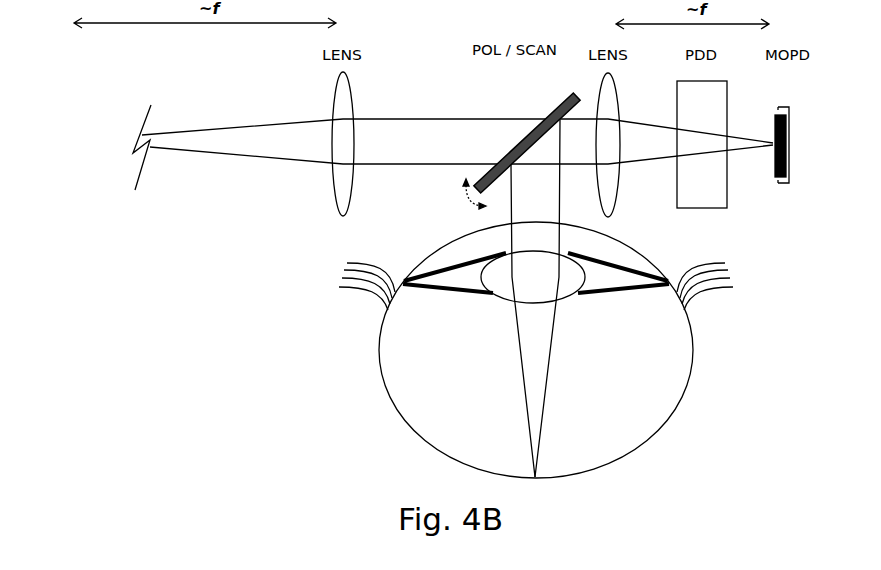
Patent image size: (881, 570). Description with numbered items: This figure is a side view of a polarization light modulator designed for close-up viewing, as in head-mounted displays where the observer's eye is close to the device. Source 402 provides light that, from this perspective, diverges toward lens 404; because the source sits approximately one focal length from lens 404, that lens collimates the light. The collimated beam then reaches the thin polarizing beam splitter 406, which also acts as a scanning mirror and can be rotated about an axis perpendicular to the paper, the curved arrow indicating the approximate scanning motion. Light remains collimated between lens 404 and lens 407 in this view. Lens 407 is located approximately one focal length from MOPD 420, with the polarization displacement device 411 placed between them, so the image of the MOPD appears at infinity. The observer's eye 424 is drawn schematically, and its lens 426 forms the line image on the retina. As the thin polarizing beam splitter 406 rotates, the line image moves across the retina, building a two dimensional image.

The source 402 is at (82, 158).
The lens 404 is at (327, 192).
The thin polarizing beam splitter 406 is at (554, 104).
The lens 407 is at (625, 197).
The polarization displacement device 411 is at (733, 202).
The MOPD 420 is at (798, 163).
The eye 424 is at (388, 398).
The lens of the eye 426 is at (568, 300).